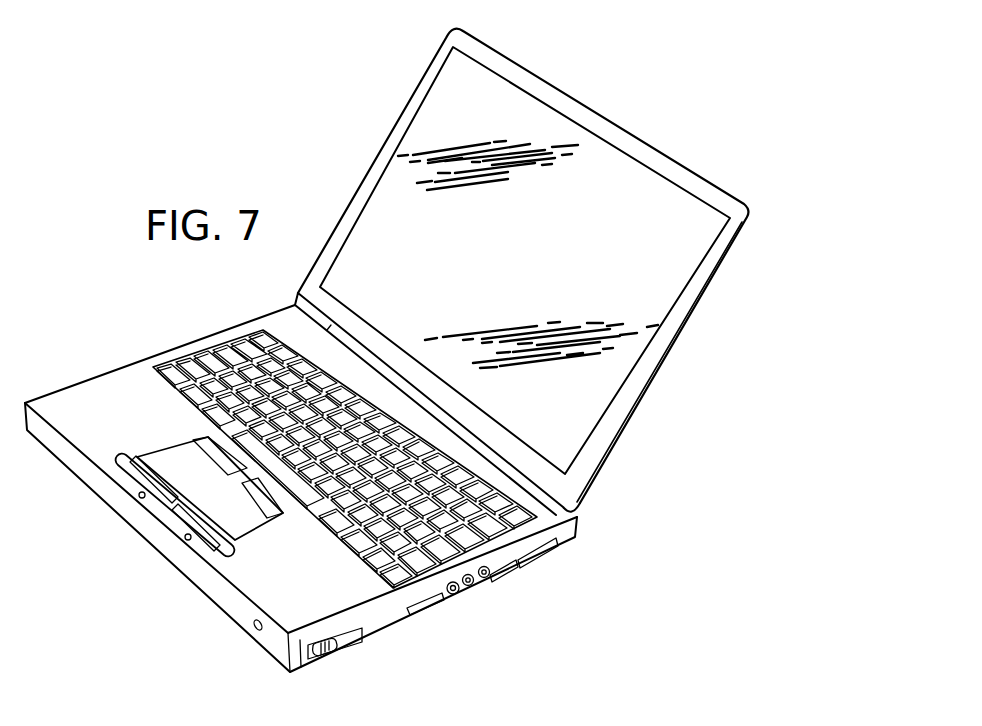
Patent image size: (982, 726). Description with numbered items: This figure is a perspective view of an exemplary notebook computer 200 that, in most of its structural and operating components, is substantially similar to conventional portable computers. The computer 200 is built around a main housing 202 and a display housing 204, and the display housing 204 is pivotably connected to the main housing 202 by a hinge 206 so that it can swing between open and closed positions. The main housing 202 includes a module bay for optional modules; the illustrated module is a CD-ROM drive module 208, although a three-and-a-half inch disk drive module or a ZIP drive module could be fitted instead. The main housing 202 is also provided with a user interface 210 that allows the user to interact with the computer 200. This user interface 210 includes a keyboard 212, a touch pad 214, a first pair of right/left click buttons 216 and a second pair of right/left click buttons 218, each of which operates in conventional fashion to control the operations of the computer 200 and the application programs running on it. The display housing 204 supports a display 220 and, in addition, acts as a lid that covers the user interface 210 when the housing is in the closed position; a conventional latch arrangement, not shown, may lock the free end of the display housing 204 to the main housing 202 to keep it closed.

The notebook computer 200 is at (193, 316).
The main housing 202 is at (108, 487).
The display housing 204 is at (398, 133).
The hinge 206 is at (572, 509).
The CD-ROM drive module 208 is at (245, 615).
The user interface 210 is at (113, 385).
The keyboard 212 is at (388, 603).
The touch pad 214 is at (168, 458).
The first pair of right/left click buttons 216 is at (205, 433).
The second pair of right/left click buttons 218 is at (192, 550).
The display 220 is at (533, 147).